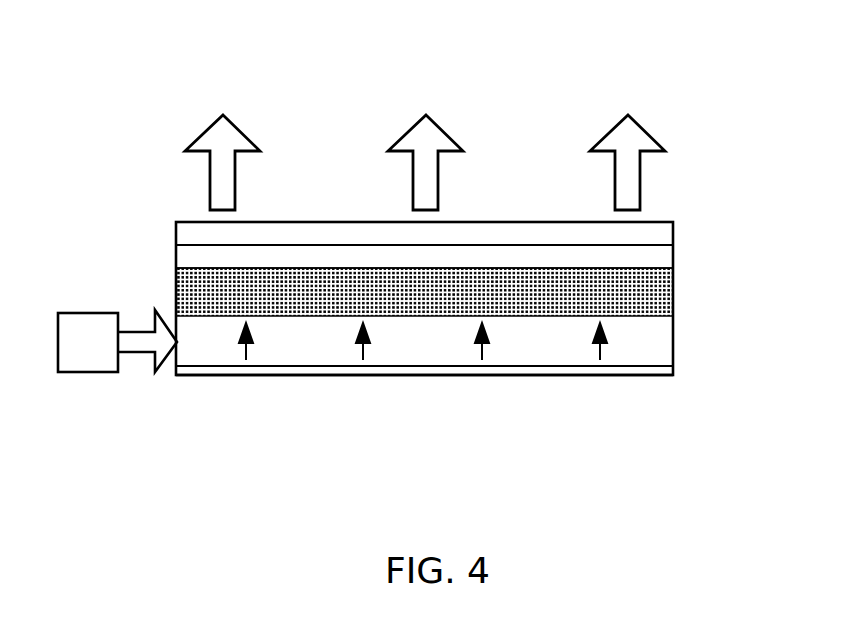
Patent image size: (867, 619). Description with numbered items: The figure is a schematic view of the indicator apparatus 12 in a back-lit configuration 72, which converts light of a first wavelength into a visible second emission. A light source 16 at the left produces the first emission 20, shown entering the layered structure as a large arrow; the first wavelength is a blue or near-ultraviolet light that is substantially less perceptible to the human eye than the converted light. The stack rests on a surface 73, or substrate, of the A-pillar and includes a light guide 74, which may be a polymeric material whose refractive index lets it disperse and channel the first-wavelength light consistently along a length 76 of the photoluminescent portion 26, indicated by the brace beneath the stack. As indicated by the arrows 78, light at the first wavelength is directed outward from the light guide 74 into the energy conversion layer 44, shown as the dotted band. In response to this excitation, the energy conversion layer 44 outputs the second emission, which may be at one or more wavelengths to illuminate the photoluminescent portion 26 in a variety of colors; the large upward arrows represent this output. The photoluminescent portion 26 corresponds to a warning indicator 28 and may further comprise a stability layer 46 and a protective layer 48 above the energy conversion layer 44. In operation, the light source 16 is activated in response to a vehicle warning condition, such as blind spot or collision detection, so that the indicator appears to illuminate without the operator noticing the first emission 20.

The indicator apparatus 12 is at (126, 68).
The light source 16 is at (88, 342).
The first emission 20 is at (133, 340).
The photoluminescent portion 26 is at (233, 140).
The warning indicator 28 is at (670, 191).
The energy conversion layer 44 is at (663, 299).
The stability layer 46 is at (665, 259).
The protective layer 48 is at (665, 240).
The back-lit configuration 72 is at (712, 124).
The surface 73 is at (186, 374).
The light guide 74 is at (663, 336).
The length 76 is at (673, 408).
The arrows 78 is at (247, 350).